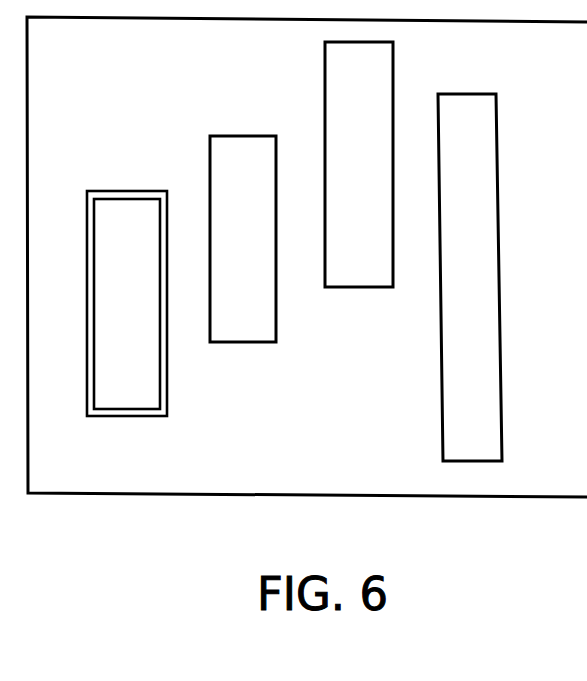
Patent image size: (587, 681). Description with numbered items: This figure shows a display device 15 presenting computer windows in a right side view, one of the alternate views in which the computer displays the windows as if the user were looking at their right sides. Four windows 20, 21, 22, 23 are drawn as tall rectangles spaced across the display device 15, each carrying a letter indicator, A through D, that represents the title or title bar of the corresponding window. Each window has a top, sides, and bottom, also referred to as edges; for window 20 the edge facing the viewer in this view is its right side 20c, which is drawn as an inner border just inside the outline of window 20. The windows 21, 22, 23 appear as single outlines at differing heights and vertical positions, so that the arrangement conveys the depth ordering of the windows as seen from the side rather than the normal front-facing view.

The display device 15 is at (500, 498).
The window 20 is at (125, 417).
The right side 20c is at (115, 233).
The window 21 is at (233, 343).
The window 22 is at (345, 288).
The window 23 is at (502, 379).